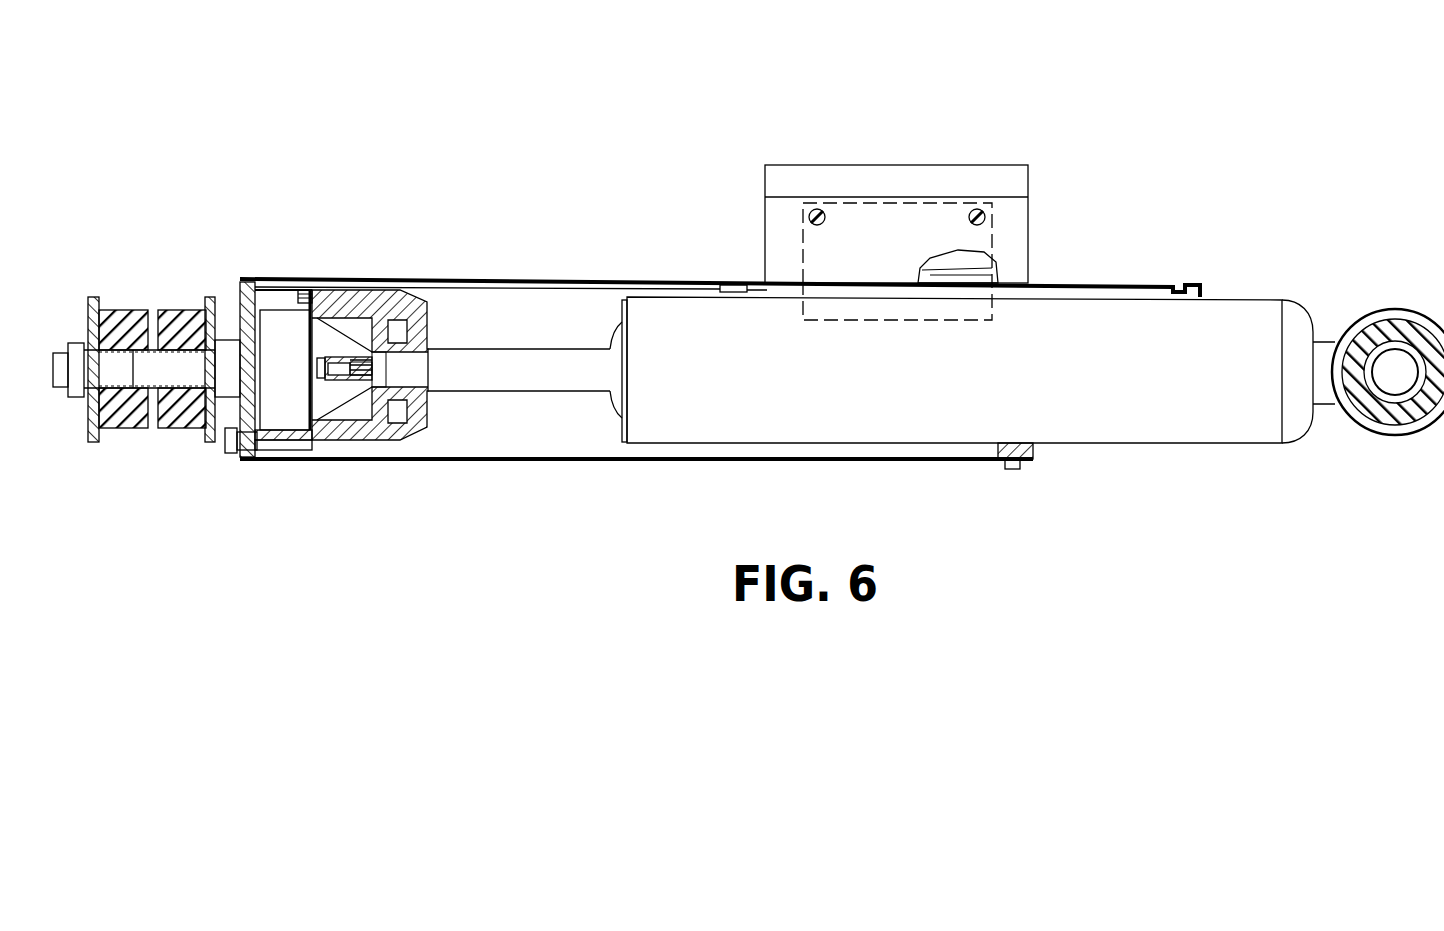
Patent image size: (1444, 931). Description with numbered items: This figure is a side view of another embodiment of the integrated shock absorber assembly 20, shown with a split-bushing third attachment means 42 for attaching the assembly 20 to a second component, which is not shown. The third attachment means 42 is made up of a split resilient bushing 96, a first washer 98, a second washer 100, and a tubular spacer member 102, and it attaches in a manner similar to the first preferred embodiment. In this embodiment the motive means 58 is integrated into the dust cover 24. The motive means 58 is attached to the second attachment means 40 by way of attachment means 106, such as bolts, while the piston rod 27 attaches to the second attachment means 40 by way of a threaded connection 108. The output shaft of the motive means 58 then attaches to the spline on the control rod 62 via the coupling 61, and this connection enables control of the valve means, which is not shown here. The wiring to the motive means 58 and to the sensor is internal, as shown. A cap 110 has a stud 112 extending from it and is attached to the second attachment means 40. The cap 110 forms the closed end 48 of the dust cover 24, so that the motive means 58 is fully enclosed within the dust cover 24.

The integrated shock absorber assembly 20 is at (880, 132).
The dust cover 24 is at (512, 461).
The piston rod 27 is at (577, 363).
The second attachment means 40 is at (405, 445).
The third attachment means 42 is at (135, 265).
The closed end 48 is at (240, 283).
The motive means 58 is at (283, 407).
The coupling 61 is at (348, 395).
The control rod 62 is at (362, 385).
The split resilient bushing 96 is at (135, 430).
The first washer 98 is at (192, 430).
The second washer 100 is at (93, 297).
The tubular spacer member 102 is at (210, 297).
The attachment means 106 is at (305, 290).
The threaded connection 108 is at (360, 362).
The cap 110 is at (248, 453).
The stud 112 is at (193, 367).